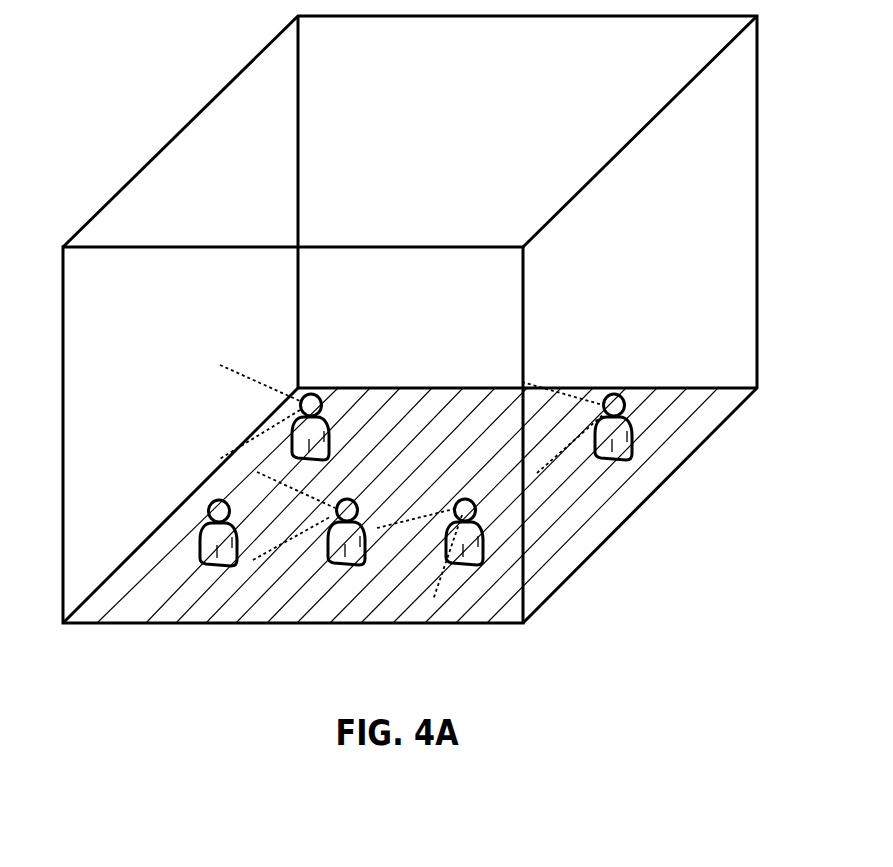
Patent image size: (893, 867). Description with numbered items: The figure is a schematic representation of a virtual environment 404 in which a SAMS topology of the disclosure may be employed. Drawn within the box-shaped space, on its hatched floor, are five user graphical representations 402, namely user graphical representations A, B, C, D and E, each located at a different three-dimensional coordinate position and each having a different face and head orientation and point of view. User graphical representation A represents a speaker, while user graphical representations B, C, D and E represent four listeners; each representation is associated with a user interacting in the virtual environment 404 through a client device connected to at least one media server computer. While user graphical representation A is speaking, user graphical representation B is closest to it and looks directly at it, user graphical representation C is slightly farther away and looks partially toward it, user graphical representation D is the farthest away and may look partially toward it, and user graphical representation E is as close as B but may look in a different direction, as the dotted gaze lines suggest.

The virtual environment 404 is at (178, 128).
The user graphical representation 402 is at (208, 503).
The user graphical representation A is at (223, 554).
The user graphical representation B is at (346, 539).
The user graphical representation C is at (464, 543).
The user graphical representation D is at (613, 436).
The user graphical representation E is at (310, 436).